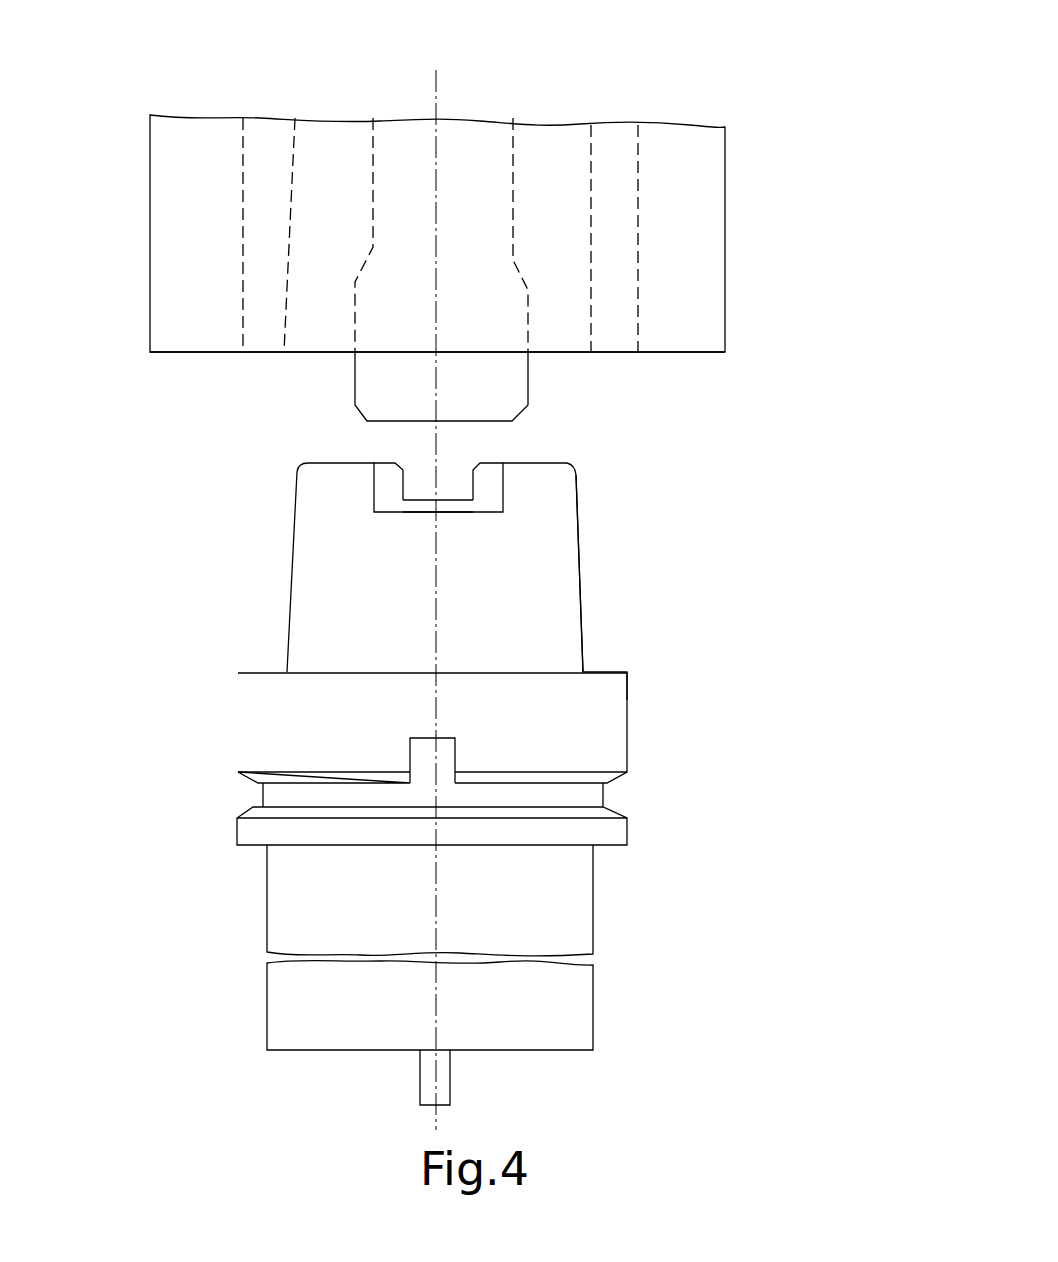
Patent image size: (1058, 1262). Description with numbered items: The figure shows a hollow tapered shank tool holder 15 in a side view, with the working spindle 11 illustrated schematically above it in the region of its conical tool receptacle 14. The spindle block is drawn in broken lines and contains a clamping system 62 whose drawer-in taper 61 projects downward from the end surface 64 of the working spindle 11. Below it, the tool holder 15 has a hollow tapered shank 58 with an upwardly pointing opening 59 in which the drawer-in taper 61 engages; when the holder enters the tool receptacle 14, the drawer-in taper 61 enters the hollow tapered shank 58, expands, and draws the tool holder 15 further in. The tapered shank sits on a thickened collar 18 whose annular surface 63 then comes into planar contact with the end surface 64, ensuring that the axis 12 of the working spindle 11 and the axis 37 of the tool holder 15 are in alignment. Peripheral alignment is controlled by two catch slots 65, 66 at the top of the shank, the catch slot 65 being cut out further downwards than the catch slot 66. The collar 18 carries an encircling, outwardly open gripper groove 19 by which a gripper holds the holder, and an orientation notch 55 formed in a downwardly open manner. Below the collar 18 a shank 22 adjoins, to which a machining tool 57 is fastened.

The working spindle 11 is at (655, 117).
The axis 12 is at (438, 97).
The conical tool receptacle 14 is at (291, 320).
The tool holder 15 is at (223, 652).
The thickened collar 18 is at (628, 733).
The gripper groove 19 is at (612, 792).
The shank 22 is at (598, 908).
The axis 37 is at (432, 557).
The orientation notch 55 is at (422, 758).
The machining tool 57 is at (420, 1084).
The hollow tapered shank 58 is at (570, 632).
The upwardly pointing opening 59 is at (550, 449).
The drawer-in taper 61 is at (495, 406).
The clamping system 62 is at (478, 160).
The annular surface 63 is at (620, 664).
The end surface 64 is at (257, 357).
The catch slot 65 is at (480, 512).
The catch slot 66 is at (418, 493).